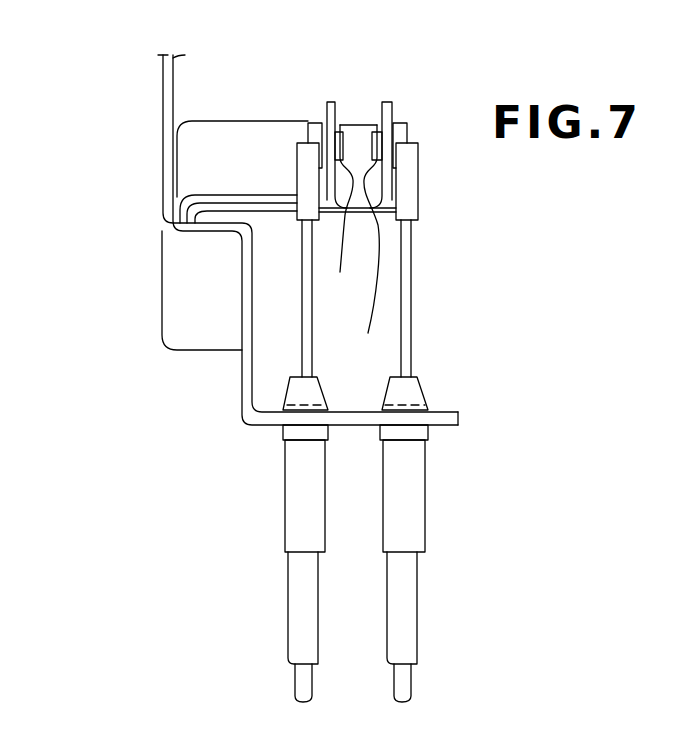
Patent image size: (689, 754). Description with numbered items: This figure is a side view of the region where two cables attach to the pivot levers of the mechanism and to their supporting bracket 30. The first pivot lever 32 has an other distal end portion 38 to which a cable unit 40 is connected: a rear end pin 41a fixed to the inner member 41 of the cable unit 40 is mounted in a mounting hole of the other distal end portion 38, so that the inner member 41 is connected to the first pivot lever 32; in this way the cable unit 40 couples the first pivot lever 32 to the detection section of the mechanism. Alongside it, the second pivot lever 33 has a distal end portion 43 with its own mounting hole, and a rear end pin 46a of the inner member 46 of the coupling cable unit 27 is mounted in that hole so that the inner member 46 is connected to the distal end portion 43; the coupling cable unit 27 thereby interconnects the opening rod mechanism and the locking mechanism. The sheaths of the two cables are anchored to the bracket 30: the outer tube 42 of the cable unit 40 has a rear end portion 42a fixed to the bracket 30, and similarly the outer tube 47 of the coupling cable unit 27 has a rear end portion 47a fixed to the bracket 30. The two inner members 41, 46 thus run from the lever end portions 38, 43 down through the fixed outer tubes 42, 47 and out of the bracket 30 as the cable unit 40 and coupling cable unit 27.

The coupling cable unit 27 is at (279, 598).
The bracket 30 is at (158, 298).
The first pivot lever 32 is at (364, 108).
The second pivot lever 33 is at (228, 104).
The other distal end portion 38 is at (393, 108).
The cable unit 40 is at (431, 606).
The inner member 41 is at (412, 338).
The rear end pin 41a is at (362, 247).
The outer tube 42 is at (415, 506).
The rear end portion 42a is at (427, 393).
The distal end portion 43 is at (326, 110).
The inner member 46 is at (303, 342).
The rear end pin 46a is at (347, 216).
The outer tube 47 is at (293, 495).
The rear end portion 47a is at (290, 390).